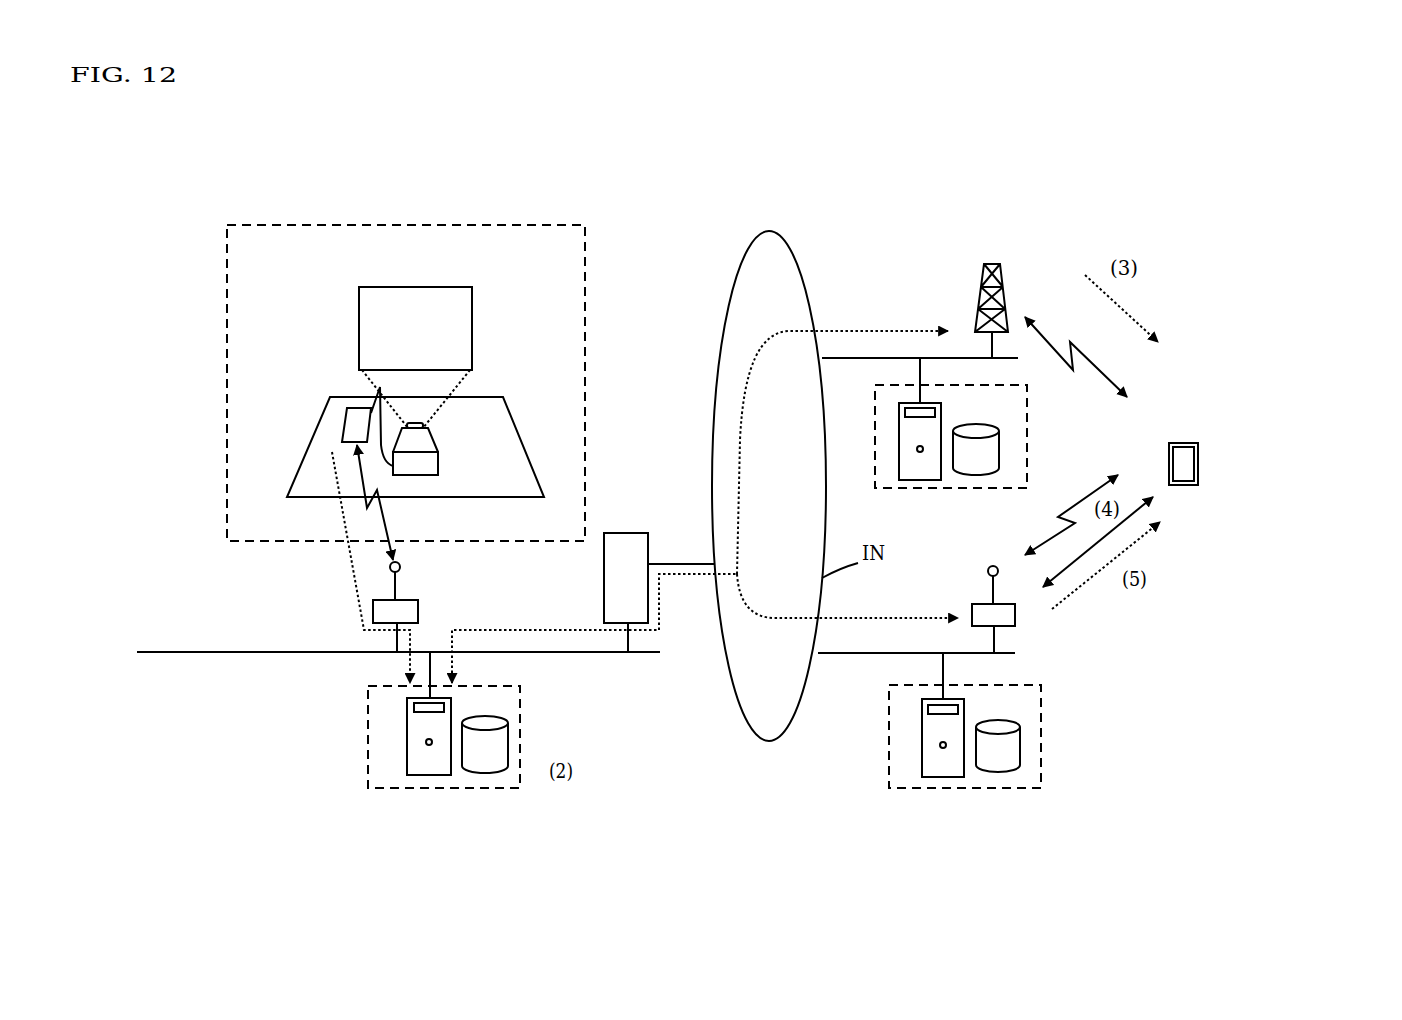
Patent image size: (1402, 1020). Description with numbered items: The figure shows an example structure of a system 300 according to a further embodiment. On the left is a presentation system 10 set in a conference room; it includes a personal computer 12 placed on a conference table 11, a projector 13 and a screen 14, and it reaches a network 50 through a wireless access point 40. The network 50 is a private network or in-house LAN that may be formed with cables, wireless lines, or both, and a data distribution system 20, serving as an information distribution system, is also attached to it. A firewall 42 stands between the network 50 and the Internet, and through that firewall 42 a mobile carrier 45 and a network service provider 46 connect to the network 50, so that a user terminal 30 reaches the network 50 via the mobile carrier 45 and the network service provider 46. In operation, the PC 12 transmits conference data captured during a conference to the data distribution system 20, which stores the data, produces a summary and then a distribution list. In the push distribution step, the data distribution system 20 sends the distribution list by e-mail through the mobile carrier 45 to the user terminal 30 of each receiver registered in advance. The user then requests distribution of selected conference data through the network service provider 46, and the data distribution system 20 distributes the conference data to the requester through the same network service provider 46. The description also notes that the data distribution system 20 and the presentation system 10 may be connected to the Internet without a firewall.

The system 300 is at (670, 141).
The presentation system 10 is at (282, 226).
The conference table 11 is at (509, 418).
The personal computer 12 is at (348, 408).
The projector 13 is at (432, 433).
The screen 14 is at (418, 287).
The data distribution system 20 is at (389, 788).
The user terminal 30 is at (1180, 443).
The wireless access point 40 is at (403, 600).
The firewall 42 is at (609, 533).
The mobile carrier 45 is at (882, 488).
The network service provider 46 is at (896, 788).
The network 50 is at (173, 652).